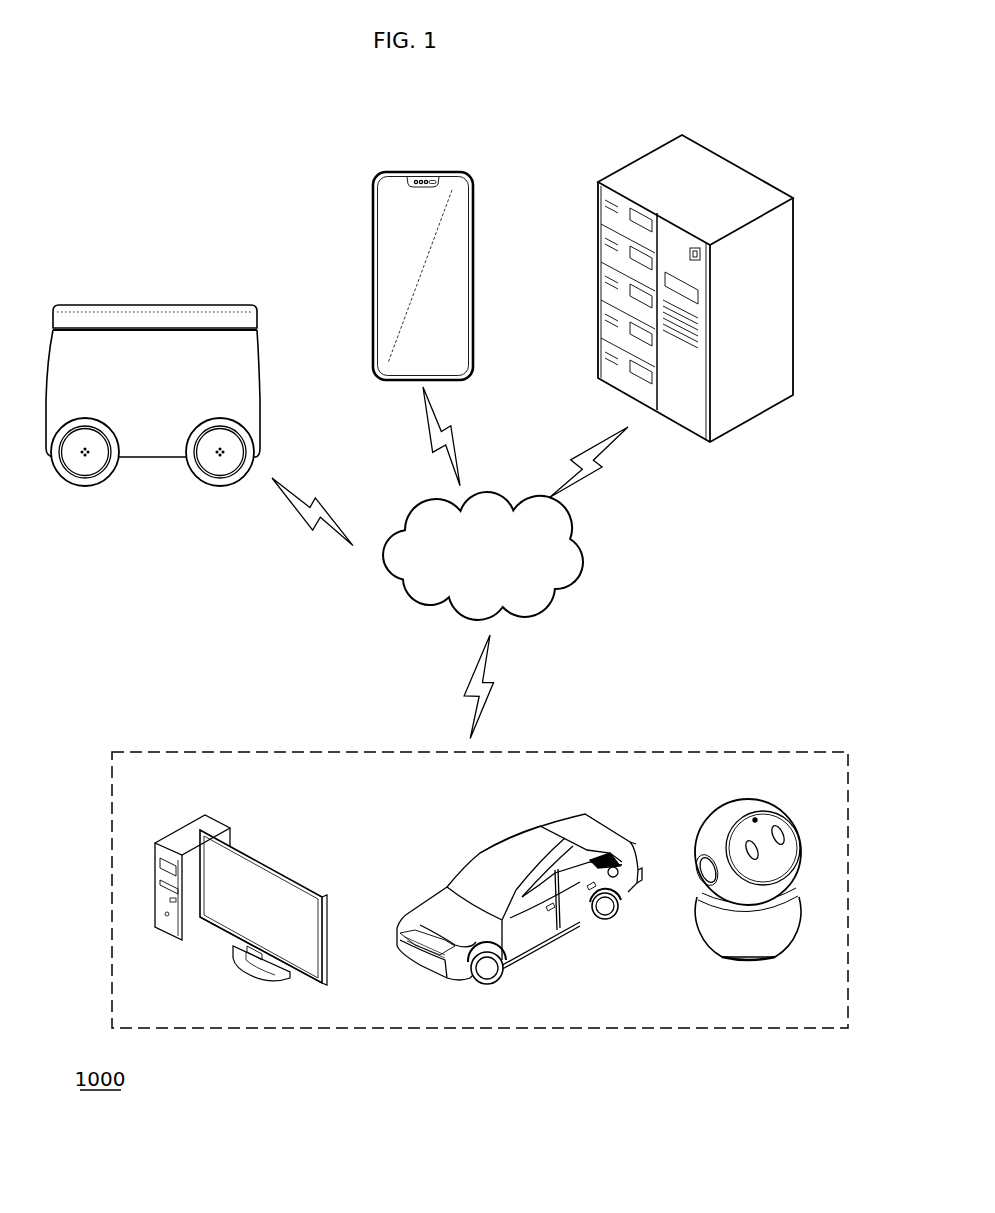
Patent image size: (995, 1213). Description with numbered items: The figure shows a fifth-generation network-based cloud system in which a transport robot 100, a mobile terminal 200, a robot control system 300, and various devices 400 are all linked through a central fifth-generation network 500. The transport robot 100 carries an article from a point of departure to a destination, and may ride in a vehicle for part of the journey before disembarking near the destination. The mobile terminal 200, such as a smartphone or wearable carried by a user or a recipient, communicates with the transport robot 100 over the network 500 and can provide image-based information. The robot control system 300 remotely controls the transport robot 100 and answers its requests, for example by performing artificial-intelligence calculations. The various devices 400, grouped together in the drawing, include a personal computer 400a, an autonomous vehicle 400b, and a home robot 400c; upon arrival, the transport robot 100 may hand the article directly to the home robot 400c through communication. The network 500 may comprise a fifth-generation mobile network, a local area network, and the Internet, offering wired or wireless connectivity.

The transport robot 100 is at (96, 308).
The mobile terminal 200 is at (453, 176).
The robot control system 300 is at (750, 188).
The various devices 400 is at (722, 752).
The personal computer 400a is at (253, 853).
The autonomous vehicle 400b is at (503, 858).
The home robot 400c is at (787, 833).
The 5G network 500 is at (494, 492).